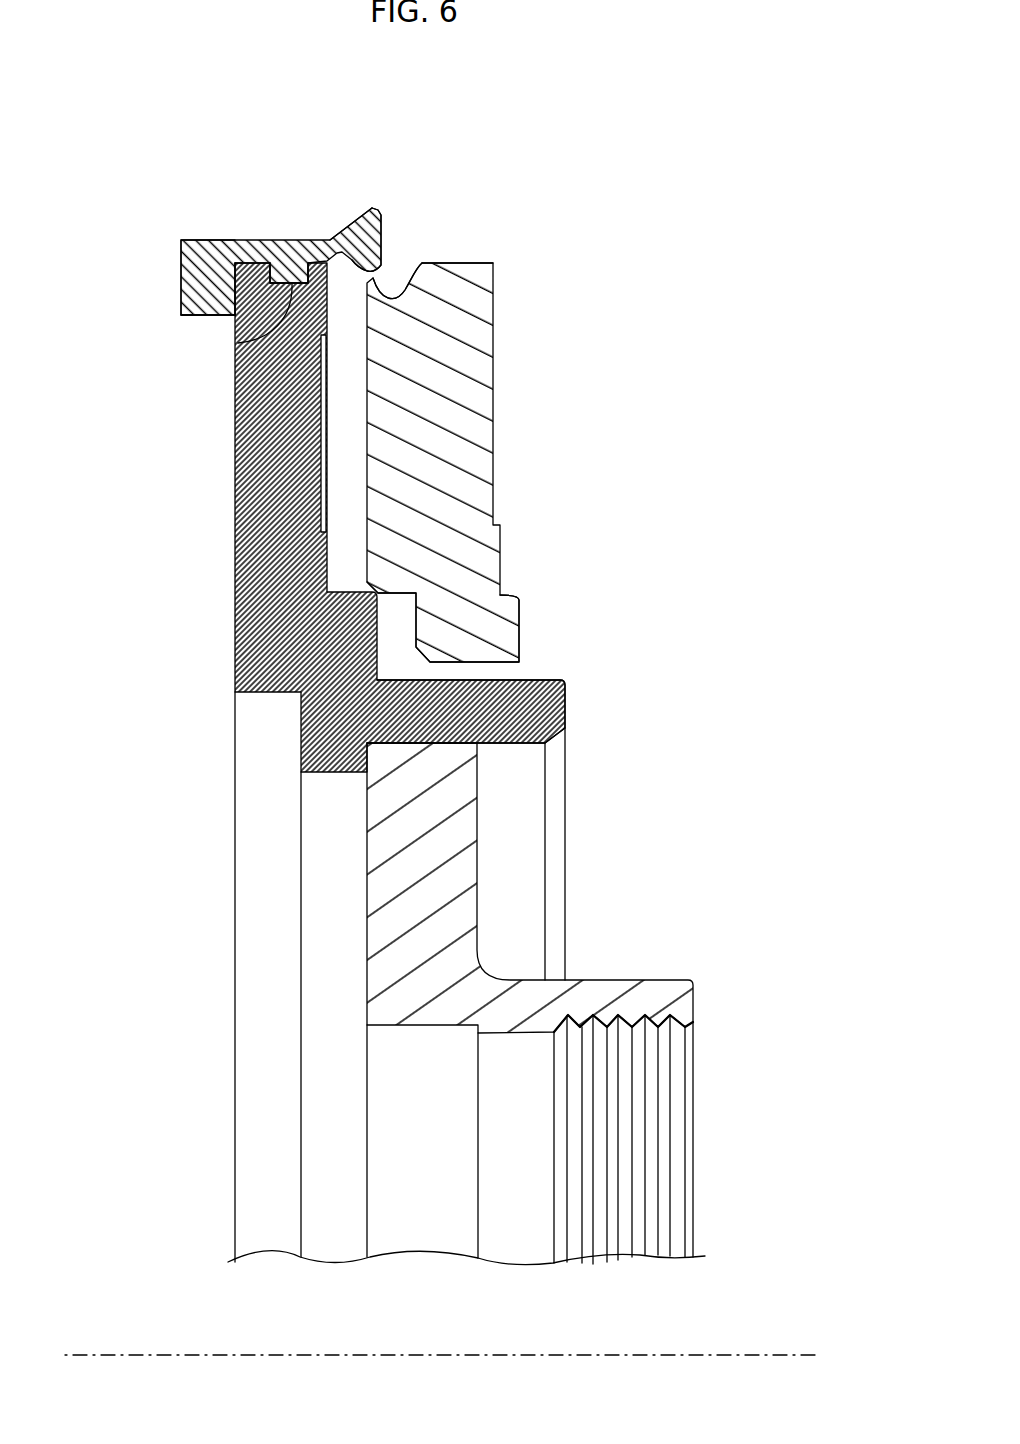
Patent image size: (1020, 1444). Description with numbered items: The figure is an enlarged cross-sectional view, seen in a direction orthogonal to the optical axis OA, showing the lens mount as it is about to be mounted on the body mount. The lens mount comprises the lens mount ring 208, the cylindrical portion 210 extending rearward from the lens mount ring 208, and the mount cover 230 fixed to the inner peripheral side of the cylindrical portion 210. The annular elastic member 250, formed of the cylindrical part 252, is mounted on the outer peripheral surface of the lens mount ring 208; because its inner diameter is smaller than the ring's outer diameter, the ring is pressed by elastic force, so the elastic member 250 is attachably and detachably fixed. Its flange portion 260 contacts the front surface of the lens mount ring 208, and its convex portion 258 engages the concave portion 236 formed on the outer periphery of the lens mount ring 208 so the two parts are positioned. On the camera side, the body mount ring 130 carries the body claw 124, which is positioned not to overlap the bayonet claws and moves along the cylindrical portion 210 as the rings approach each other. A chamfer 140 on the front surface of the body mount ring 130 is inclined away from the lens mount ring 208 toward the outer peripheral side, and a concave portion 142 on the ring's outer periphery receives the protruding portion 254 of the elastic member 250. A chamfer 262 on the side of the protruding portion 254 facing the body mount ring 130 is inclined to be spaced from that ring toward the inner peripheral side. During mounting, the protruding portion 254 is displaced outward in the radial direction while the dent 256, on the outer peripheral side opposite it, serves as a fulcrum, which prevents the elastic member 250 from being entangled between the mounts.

The elastic member 250 is at (245, 137).
The cylindrical part 252 is at (290, 256).
The concave portion 236 is at (262, 240).
The dent 256 is at (331, 238).
The chamfer 262 is at (360, 186).
The protruding portion 254 is at (396, 297).
The body mount ring 130 is at (488, 418).
The concave portion 142 is at (421, 276).
The chamfer 140 is at (474, 333).
The body claw 124 is at (513, 623).
The flange portion 260 is at (203, 316).
The convex portion 258 is at (238, 343).
The lens mount ring 208 is at (203, 455).
The cylindrical portion 210 is at (556, 693).
The mount cover 230 is at (458, 895).
The optical axis OA is at (69, 1359).